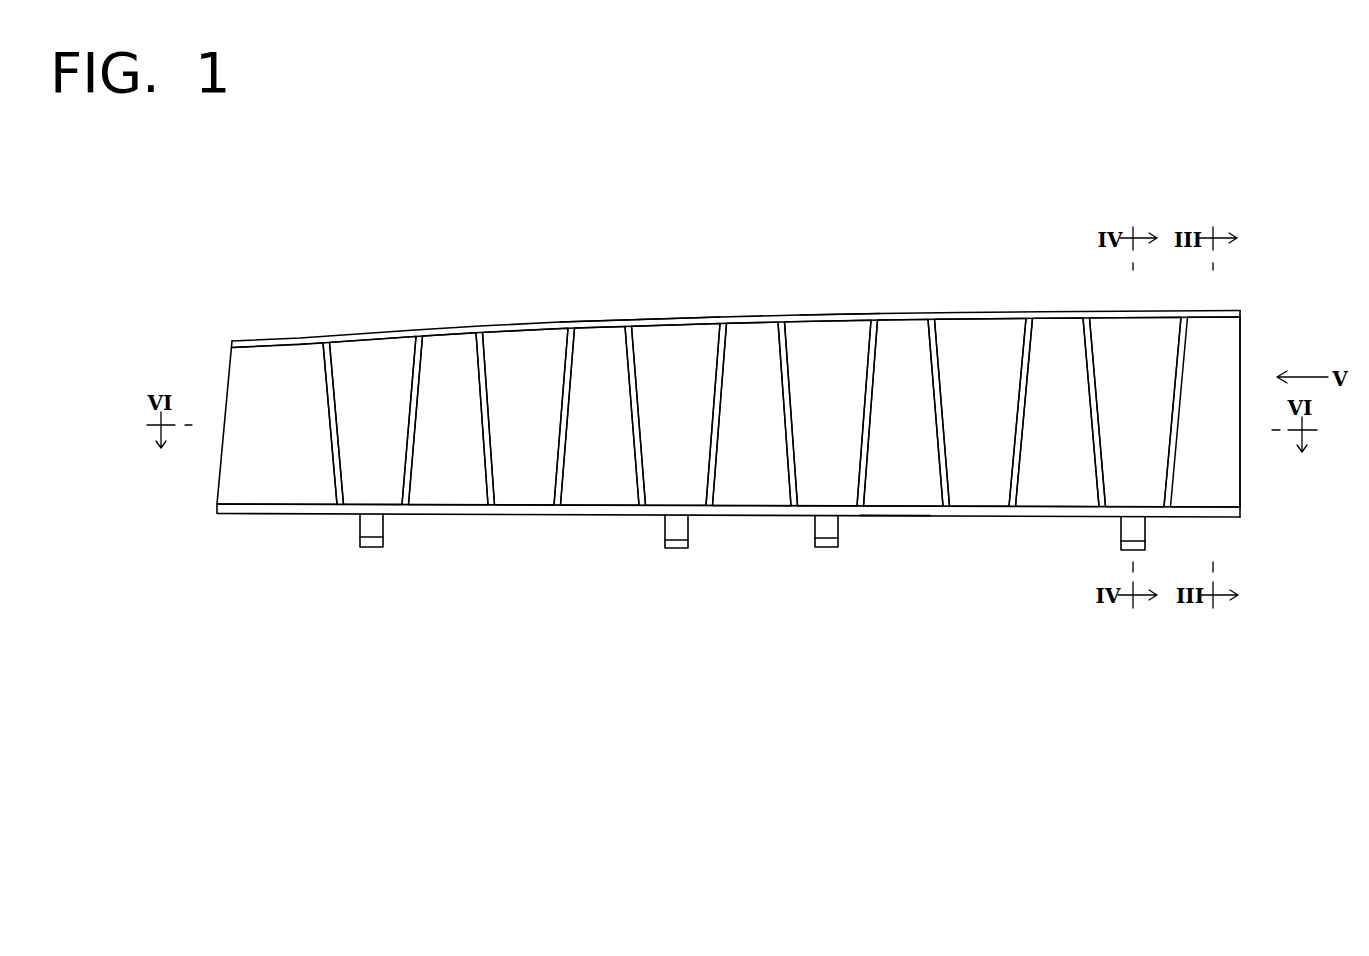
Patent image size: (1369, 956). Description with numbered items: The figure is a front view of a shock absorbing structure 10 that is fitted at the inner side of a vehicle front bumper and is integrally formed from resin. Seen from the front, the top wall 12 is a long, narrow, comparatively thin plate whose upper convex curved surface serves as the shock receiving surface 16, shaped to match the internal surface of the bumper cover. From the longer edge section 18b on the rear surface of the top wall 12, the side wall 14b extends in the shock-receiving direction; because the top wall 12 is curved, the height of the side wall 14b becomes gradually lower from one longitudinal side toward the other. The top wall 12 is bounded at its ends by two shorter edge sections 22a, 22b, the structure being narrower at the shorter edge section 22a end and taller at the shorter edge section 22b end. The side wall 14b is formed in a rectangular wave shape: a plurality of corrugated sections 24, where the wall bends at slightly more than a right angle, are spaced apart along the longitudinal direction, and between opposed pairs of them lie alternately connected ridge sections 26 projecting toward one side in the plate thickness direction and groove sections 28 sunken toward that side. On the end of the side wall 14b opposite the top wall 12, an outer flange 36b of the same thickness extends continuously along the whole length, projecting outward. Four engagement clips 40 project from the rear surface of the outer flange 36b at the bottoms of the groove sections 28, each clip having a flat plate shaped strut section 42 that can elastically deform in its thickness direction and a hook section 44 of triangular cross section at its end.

The shock absorbing structure 10 is at (763, 408).
The top wall 12 is at (736, 295).
The side wall 14b is at (709, 523).
The shock receiving surface 16 is at (640, 280).
The longer edge section 18b is at (846, 276).
The shorter edge section 22a is at (209, 392).
The shorter edge section 22b is at (1291, 377).
The corrugated section 24 is at (823, 387).
The ridge section 26 is at (782, 421).
The groove section 28 is at (756, 422).
The outer flange 36b is at (895, 567).
The engagement clip 40 is at (791, 580).
The strut section 42 is at (791, 556).
The hook section 44 is at (752, 587).